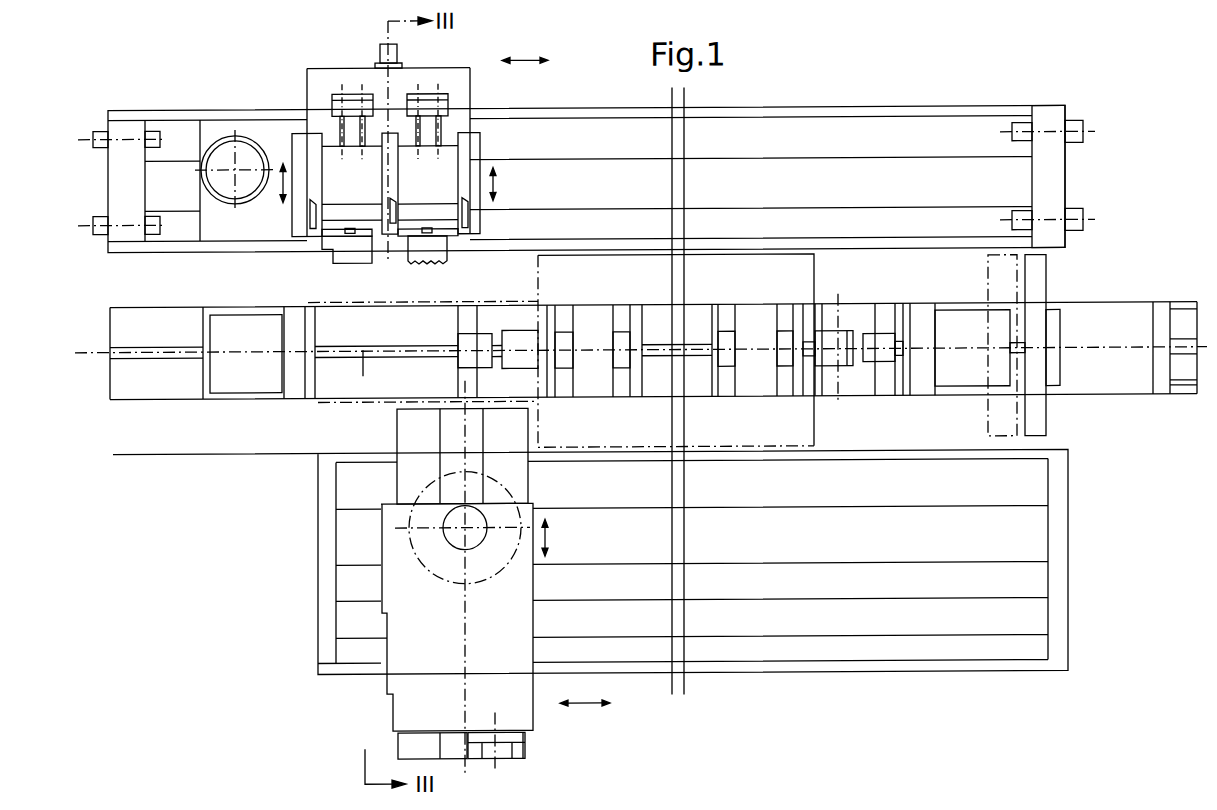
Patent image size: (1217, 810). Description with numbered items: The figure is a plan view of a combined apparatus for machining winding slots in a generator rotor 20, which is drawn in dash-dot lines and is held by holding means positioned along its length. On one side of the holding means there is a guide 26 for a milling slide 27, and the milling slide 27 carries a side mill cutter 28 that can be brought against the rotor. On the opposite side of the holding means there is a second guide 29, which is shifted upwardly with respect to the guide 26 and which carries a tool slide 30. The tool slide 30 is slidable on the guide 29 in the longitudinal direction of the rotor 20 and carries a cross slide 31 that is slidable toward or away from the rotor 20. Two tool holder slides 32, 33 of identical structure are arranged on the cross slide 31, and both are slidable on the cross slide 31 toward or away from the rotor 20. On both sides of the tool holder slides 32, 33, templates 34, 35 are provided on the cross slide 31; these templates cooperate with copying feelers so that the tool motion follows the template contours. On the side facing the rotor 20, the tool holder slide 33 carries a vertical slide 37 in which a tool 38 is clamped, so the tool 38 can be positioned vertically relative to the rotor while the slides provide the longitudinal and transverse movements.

The generator rotor 20 is at (814, 278).
The guide 26 is at (760, 652).
The milling slide 27 is at (405, 672).
The side mill cutter 28 is at (417, 550).
The guide 29 is at (792, 133).
The tool slide 30 is at (473, 150).
The cross slide 31 is at (367, 80).
The tool holder slide 32 is at (341, 165).
The tool holder slide 33 is at (437, 167).
The template 34 is at (393, 225).
The template 35 is at (463, 225).
The vertical slide 37 is at (445, 222).
The tool 38 is at (423, 247).